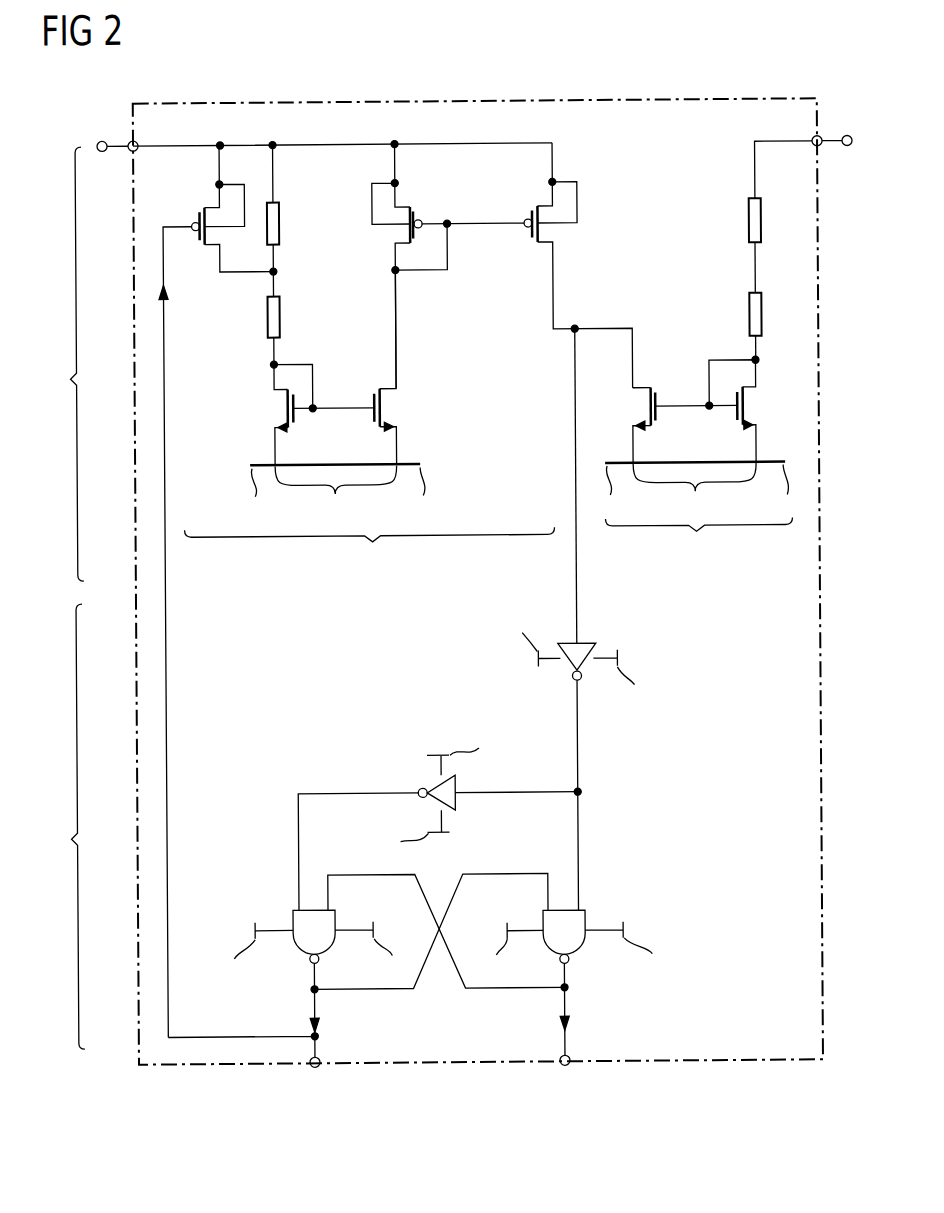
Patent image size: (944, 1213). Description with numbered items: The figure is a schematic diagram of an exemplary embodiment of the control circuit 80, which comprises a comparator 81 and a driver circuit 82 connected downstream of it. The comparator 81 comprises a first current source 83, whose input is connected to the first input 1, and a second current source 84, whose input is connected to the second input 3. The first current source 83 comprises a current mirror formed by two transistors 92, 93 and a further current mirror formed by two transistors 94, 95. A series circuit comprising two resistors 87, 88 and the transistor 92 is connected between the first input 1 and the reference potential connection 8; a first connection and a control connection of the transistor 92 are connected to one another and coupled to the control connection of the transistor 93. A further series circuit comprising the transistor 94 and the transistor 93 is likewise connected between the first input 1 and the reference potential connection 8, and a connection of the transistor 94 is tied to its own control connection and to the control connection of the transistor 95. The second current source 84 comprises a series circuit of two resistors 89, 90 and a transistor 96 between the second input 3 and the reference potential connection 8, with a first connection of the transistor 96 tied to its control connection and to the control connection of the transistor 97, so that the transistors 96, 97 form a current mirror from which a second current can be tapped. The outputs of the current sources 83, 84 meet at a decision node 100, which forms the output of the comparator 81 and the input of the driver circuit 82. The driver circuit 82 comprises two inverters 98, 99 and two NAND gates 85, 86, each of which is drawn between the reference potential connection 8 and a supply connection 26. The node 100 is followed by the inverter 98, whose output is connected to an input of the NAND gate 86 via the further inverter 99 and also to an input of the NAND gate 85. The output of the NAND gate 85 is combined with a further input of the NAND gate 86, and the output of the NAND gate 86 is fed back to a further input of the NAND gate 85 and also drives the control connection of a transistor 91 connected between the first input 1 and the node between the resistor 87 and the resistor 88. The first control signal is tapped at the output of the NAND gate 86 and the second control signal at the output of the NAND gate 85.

The first input 1 is at (105, 138).
The second input 3 is at (851, 138).
The reference potential connection 8 is at (505, 720).
The supply potential terminal VDD 26 is at (522, 790).
The control circuit 80 is at (451, 100).
The comparator 81 is at (63, 364).
The driver circuit 82 is at (64, 826).
The first current source 83 is at (369, 518).
The second current source 84 is at (699, 512).
The NAND gate 85 is at (577, 951).
The NAND gate 86 is at (297, 949).
The resistor 87 is at (282, 228).
The resistor 88 is at (282, 312).
The resistor 89 is at (750, 222).
The resistor 90 is at (750, 312).
The transistor 91 is at (207, 247).
The transistor 92 is at (287, 407).
The transistor 93 is at (386, 407).
The transistor 94 is at (415, 206).
The transistor 95 is at (540, 247).
The transistor 96 is at (743, 407).
The transistor 97 is at (655, 408).
The inverter 98 is at (583, 643).
The further inverter 99 is at (419, 786).
The decision node 100 is at (576, 333).